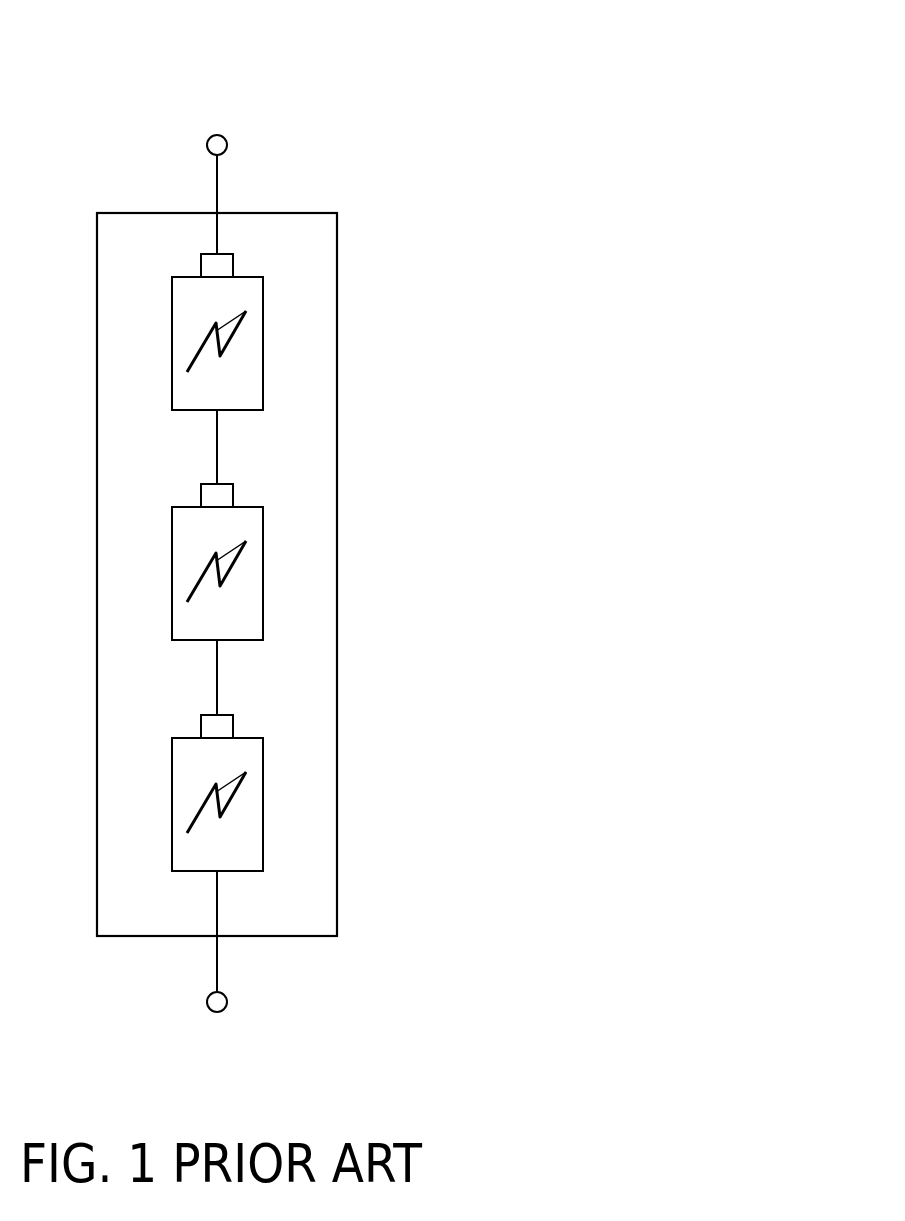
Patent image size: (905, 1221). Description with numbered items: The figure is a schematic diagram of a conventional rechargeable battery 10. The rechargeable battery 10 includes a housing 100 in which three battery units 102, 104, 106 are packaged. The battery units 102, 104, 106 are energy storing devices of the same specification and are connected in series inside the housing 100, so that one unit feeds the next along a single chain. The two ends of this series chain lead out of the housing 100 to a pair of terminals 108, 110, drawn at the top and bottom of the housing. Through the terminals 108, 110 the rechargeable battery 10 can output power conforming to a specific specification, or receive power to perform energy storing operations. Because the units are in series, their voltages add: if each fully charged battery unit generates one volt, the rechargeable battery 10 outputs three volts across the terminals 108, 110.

The rechargeable battery 10 is at (452, 62).
The housing 100 is at (308, 213).
The battery unit 102 is at (263, 342).
The battery unit 104 is at (263, 572).
The battery unit 106 is at (263, 803).
The terminal 108 is at (227, 140).
The terminal 110 is at (227, 995).